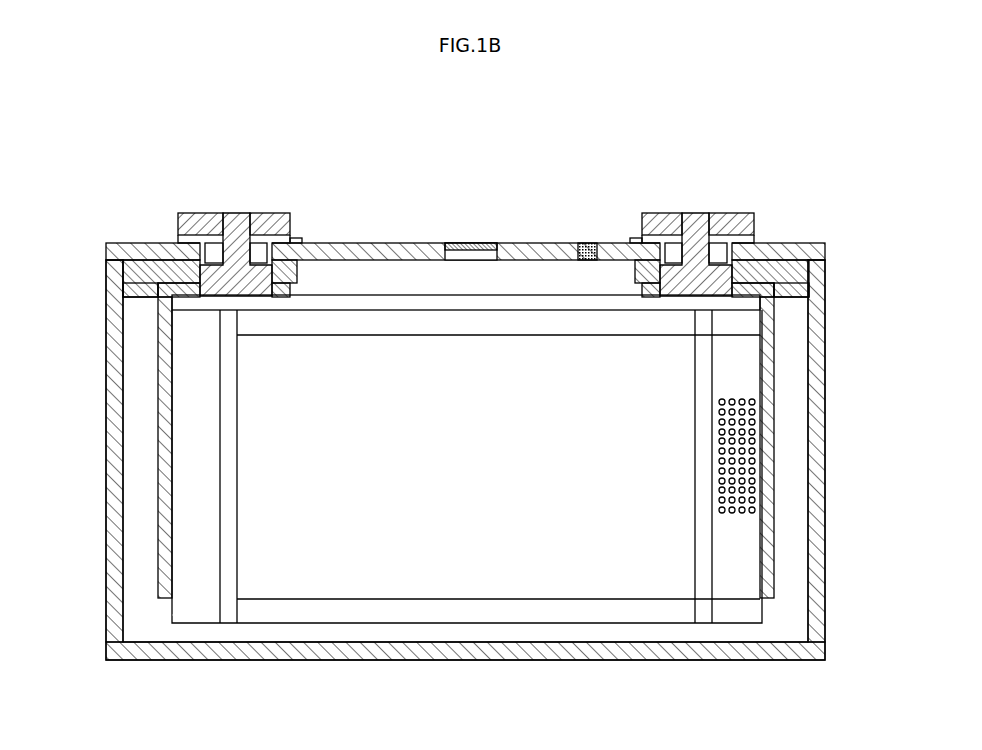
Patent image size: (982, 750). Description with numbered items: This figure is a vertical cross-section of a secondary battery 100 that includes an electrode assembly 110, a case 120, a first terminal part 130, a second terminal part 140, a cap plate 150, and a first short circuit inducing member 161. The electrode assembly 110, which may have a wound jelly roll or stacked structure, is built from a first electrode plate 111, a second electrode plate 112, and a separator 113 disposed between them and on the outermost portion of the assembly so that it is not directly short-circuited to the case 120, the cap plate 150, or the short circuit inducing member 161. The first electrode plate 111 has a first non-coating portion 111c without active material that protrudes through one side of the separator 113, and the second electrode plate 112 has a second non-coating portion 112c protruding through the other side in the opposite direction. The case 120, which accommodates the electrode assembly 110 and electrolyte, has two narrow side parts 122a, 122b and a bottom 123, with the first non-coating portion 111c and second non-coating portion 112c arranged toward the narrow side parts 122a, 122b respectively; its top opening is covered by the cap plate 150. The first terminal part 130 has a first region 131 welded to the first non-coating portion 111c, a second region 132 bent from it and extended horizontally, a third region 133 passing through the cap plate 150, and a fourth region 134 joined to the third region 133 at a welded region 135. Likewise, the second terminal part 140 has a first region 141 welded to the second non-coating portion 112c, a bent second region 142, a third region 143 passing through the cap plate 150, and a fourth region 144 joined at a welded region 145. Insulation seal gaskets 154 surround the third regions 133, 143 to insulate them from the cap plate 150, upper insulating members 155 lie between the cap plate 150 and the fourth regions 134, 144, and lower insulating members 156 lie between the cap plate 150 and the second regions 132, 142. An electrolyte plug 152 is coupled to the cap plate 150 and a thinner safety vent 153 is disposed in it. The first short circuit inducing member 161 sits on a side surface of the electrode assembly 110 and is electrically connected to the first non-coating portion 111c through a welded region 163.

The secondary battery 100 is at (466, 103).
The electrode assembly 110 is at (485, 626).
The first electrode plate 111 is at (770, 600).
The first non-coating portion 111c is at (755, 613).
The second electrode plate 112 is at (168, 600).
The second non-coating portion 112c is at (185, 615).
The separator 113 is at (375, 618).
The case 120 is at (805, 662).
The narrow side part 122a is at (822, 393).
The narrow side part 122b is at (117, 393).
The bottom 123 is at (600, 650).
The first terminal part 130 is at (857, 144).
The first region 131 is at (808, 247).
The second region 132 is at (785, 247).
The third region 133 is at (755, 247).
The fourth region 134 is at (670, 213).
The welded region 135 is at (712, 240).
The second terminal part 140 is at (285, 136).
The first region 141 is at (113, 244).
The second region 142 is at (176, 258).
The third region 143 is at (188, 262).
The fourth region 144 is at (272, 213).
The welded region 145 is at (252, 240).
The cap plate 150 is at (425, 243).
The electrolyte plug 152 is at (583, 243).
The safety vent 153 is at (492, 243).
The insulation seal gasket 154 is at (322, 243).
The upper insulating member 155 is at (292, 240).
The lower insulating member 156 is at (127, 287).
The first short circuit inducing member 161 is at (668, 602).
The welded region 163 is at (756, 450).